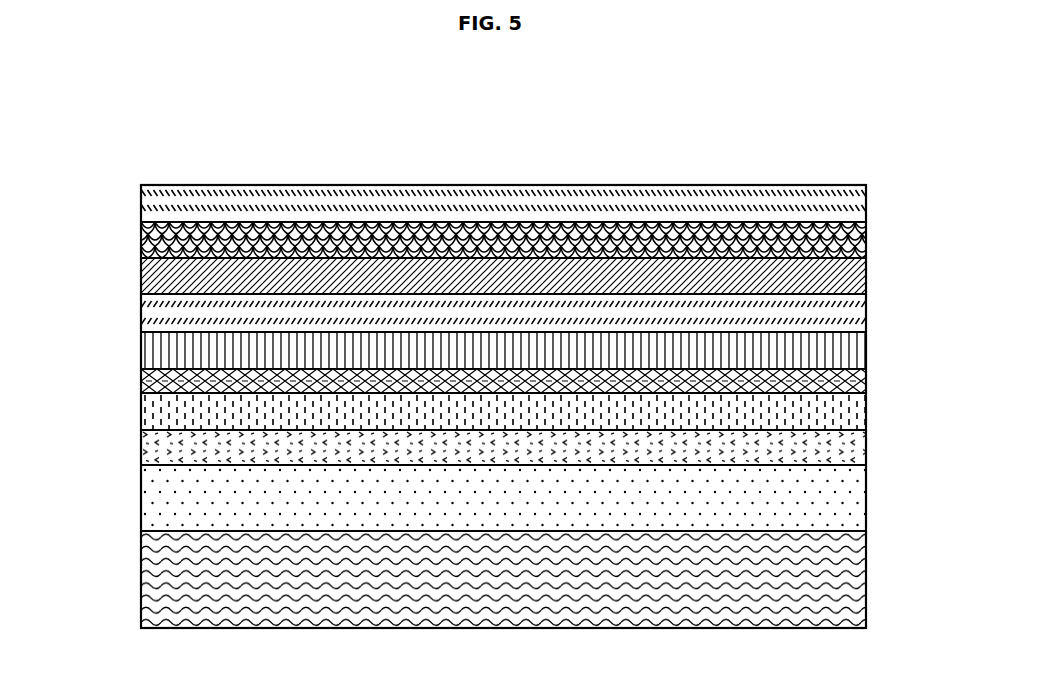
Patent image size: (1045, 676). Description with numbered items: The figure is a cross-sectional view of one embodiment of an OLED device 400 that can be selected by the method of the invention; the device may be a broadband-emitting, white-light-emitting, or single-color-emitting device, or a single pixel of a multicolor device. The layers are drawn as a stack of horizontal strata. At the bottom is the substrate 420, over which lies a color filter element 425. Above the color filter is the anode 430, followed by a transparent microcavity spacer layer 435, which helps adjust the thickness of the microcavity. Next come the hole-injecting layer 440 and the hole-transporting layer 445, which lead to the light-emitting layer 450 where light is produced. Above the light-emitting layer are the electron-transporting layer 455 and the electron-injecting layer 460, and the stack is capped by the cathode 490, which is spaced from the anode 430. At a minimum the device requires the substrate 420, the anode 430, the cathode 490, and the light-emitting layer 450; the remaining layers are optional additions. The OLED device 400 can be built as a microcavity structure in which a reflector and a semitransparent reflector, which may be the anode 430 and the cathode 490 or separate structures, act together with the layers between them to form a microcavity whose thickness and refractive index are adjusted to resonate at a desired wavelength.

The OLED device 400 is at (484, 394).
The substrate 420 is at (852, 570).
The color filter element 425 is at (852, 494).
The anode 430 is at (852, 440).
The microcavity spacer layer 435 is at (855, 410).
The hole-injecting layer 440 is at (855, 377).
The hole-transporting layer 445 is at (855, 343).
The light-emitting layer 450 is at (855, 313).
The electron-transporting layer 455 is at (855, 270).
The electron-injecting layer 460 is at (855, 235).
The cathode 490 is at (855, 202).